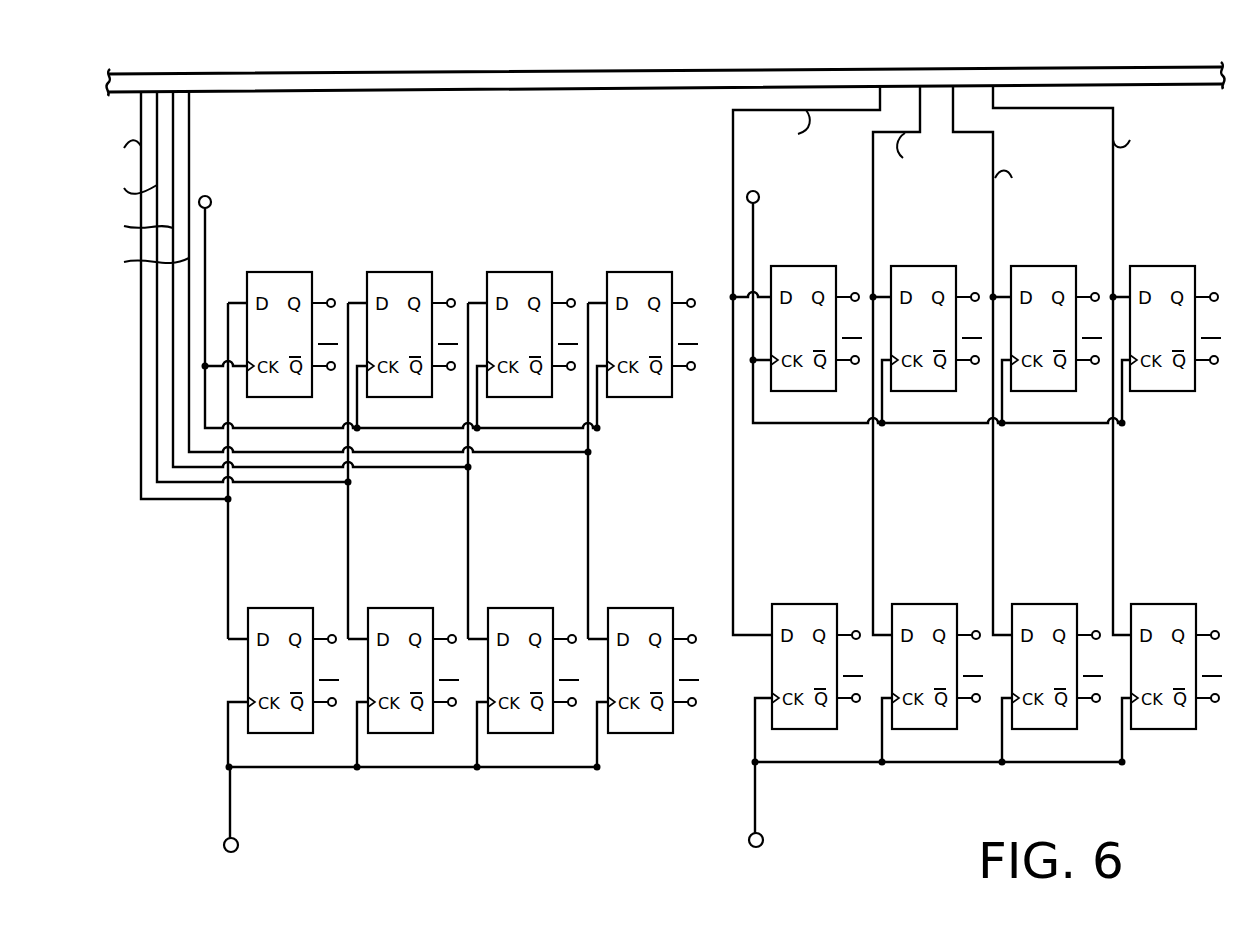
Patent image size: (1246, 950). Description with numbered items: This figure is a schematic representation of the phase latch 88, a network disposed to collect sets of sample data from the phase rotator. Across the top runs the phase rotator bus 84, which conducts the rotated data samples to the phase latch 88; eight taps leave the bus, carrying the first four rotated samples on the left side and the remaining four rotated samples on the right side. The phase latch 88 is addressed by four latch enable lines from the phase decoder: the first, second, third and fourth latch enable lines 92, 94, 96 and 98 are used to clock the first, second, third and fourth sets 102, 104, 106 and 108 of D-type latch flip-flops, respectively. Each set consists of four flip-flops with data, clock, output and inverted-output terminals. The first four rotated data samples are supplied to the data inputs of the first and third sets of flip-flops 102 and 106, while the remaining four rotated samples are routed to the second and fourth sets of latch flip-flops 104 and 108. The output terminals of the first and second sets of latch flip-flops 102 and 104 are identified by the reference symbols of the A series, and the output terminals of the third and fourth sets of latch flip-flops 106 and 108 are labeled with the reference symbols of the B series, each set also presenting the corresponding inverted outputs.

The phase rotator bus 84 is at (713, 70).
The phase latch 88 is at (392, 47).
The first latch enable line 92 is at (212, 200).
The second latch enable line 94 is at (760, 195).
The third latch enable line 96 is at (238, 840).
The fourth latch enable line 98 is at (763, 835).
The first set of D-type latch flip-flops 102 is at (473, 314).
The second set of D-type latch flip-flops 104 is at (997, 308).
The third set of D-type latch flip-flops 106 is at (474, 650).
The fourth set of D-type latch flip-flops 108 is at (998, 646).